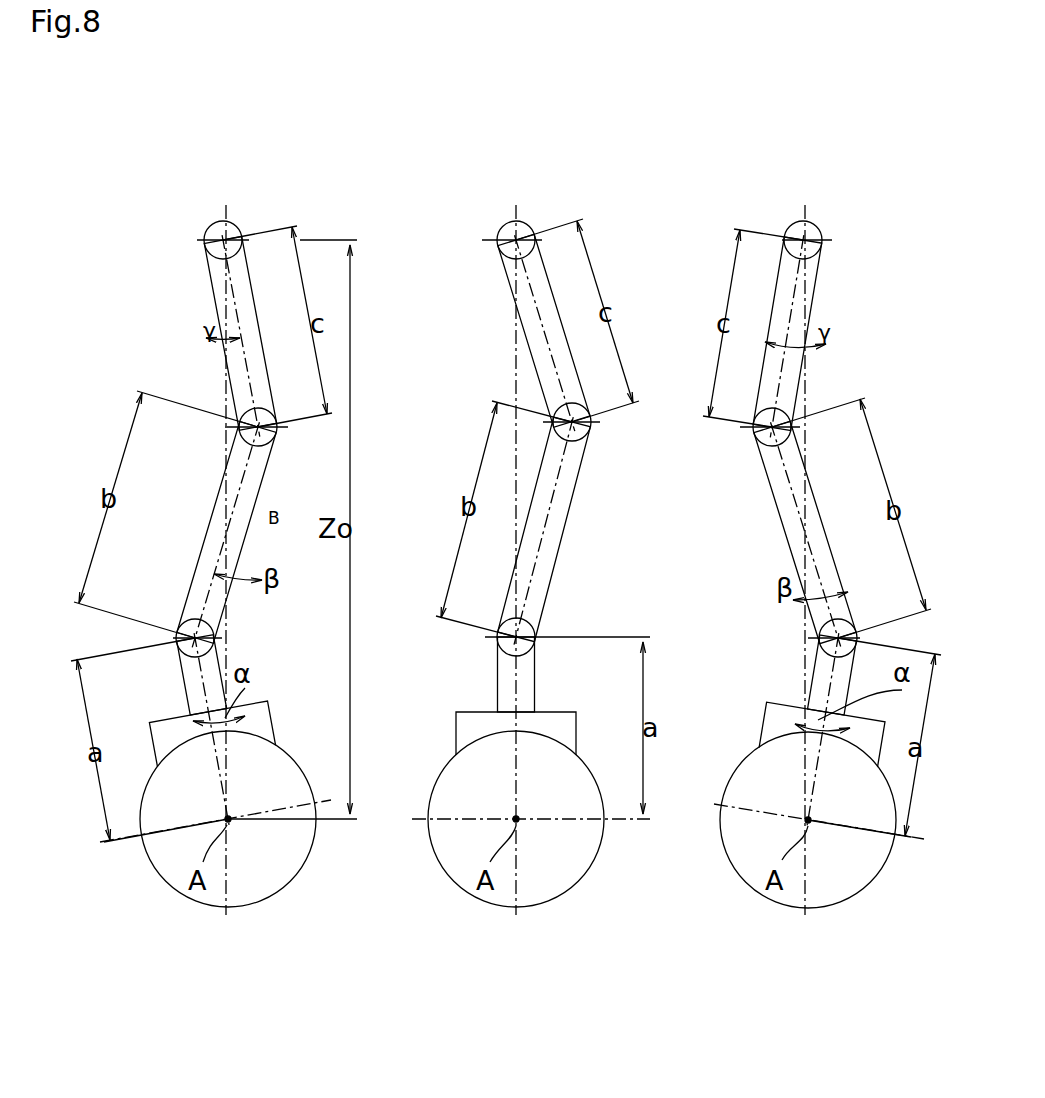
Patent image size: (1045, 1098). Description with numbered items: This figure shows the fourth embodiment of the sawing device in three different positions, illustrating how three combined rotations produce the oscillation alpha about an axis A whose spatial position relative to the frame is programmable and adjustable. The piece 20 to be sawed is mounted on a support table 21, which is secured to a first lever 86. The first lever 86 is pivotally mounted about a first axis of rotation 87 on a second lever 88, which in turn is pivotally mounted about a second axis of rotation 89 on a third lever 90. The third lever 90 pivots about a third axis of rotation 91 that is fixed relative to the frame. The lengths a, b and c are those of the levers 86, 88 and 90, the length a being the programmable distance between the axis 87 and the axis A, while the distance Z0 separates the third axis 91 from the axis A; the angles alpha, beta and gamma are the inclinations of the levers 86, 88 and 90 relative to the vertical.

The piece to be sawed 20 is at (157, 848).
The support table 21 is at (542, 730).
The first lever 86 is at (523, 681).
The first axis of rotation 87 is at (533, 632).
The second lever 88 is at (543, 547).
The second axis of rotation 89 is at (588, 436).
The third lever 90 is at (545, 302).
The third axis of rotation 91 is at (205, 230).